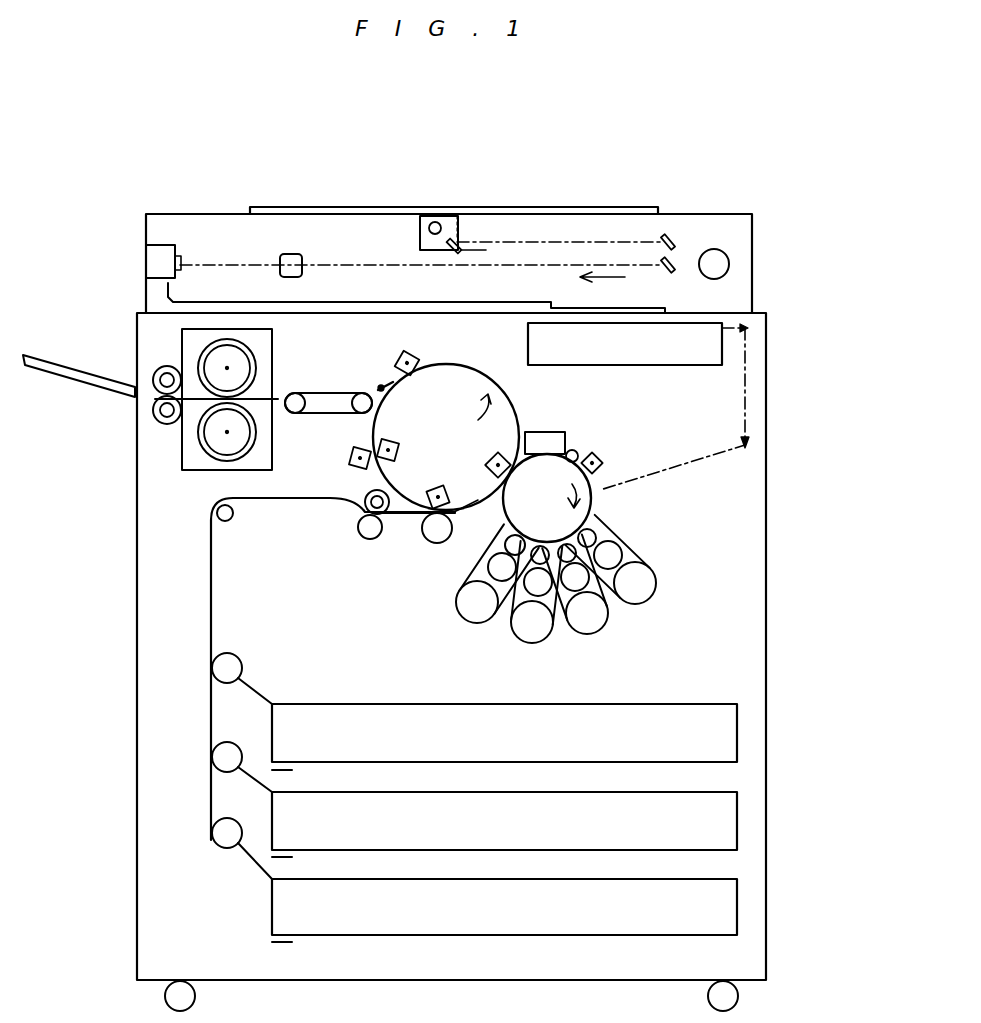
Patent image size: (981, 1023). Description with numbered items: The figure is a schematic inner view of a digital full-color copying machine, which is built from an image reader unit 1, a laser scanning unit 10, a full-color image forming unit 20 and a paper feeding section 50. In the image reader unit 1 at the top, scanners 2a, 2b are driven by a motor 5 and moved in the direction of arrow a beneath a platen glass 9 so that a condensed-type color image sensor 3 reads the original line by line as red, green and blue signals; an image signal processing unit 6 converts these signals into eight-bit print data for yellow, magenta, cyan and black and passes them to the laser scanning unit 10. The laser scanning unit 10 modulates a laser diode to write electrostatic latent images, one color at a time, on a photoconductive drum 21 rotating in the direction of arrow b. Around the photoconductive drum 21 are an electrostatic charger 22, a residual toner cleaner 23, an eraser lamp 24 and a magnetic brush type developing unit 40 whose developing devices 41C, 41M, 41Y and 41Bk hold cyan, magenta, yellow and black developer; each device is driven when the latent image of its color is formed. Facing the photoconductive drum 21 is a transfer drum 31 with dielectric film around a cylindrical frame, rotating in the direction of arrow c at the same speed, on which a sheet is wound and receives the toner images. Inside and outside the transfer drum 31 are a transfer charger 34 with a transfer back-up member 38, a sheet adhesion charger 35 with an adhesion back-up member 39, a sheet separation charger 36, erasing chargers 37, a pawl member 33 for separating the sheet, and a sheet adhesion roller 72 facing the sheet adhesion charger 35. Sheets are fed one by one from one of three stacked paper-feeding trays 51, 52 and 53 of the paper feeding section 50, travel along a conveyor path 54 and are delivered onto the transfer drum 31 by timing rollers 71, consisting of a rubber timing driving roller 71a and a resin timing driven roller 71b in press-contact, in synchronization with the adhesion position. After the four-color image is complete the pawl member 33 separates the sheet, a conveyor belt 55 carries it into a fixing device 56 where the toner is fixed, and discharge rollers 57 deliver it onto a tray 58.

The image reader unit 1 is at (350, 262).
The scanner 2a is at (425, 228).
The scanner 2b is at (672, 238).
The color image sensor 3 is at (190, 245).
The motor 5 is at (714, 250).
The image signal processing unit 6 is at (146, 262).
The platen glass 9 is at (604, 208).
The laser scanning unit 10 is at (596, 359).
The full-color image forming unit 20 is at (402, 625).
The photoconductive drum 21 is at (605, 480).
The electrostatic charger 22 is at (600, 455).
The residual toner cleaner 23 is at (530, 430).
The eraser lamp 24 is at (574, 448).
The transfer drum 31 is at (474, 363).
The pawl member 33 is at (380, 386).
The transfer charger 34 is at (486, 458).
The sheet adhesion charger 35 is at (440, 488).
The sheet separation charger 36 is at (400, 352).
The erasing chargers 37 is at (394, 440).
The transfer back-up member 38 is at (470, 524).
The adhesion back-up member 39 is at (414, 515).
The developing unit 40 is at (580, 590).
The developing device 41Bk is at (487, 626).
The developing device 41Y is at (552, 641).
The developing device 41M is at (608, 613).
The developing device 41C is at (620, 541).
The paper feeding section 50 is at (224, 935).
The paper-feeding tray 51 is at (332, 712).
The paper-feeding tray 52 is at (410, 805).
The paper-feeding tray 53 is at (500, 890).
The conveyor path 54 is at (211, 570).
The conveyor belt 55 is at (325, 392).
The fixing device 56 is at (198, 455).
The discharge rollers 57 is at (160, 422).
The tray 58 is at (73, 368).
The timing rollers 71 is at (335, 509).
The timing driving roller 71a is at (366, 496).
The timing driven roller 71b is at (370, 540).
The sheet adhesion roller 72 is at (437, 544).
The direction of scanner movement a is at (594, 288).
The direction of photoconductive drum rotation b is at (563, 505).
The direction of transfer drum rotation c is at (476, 400).